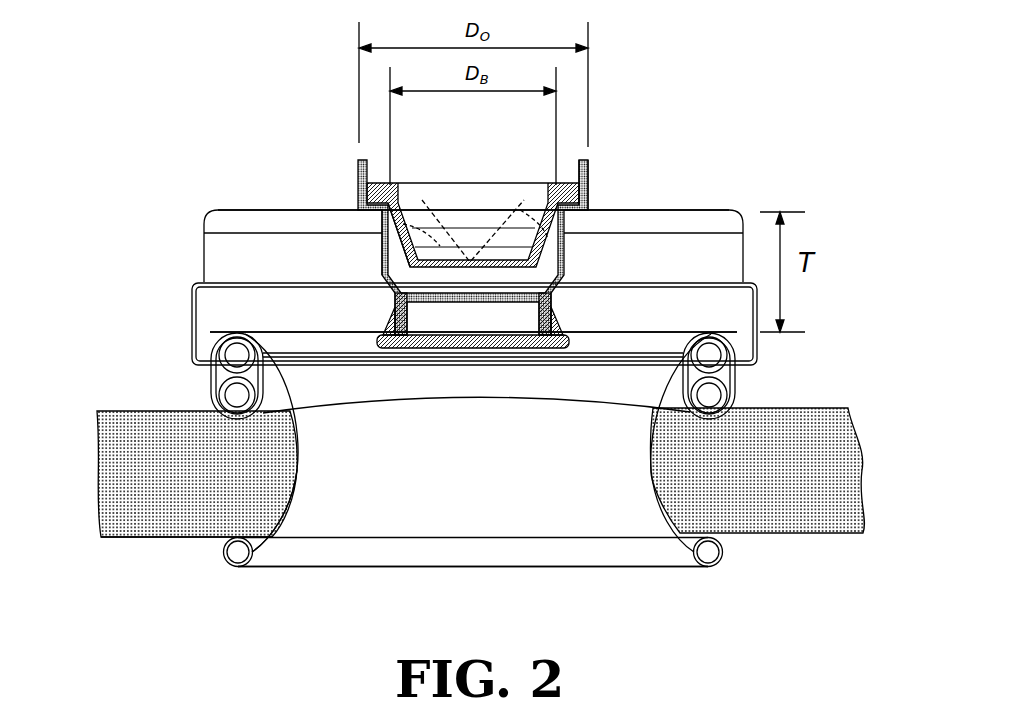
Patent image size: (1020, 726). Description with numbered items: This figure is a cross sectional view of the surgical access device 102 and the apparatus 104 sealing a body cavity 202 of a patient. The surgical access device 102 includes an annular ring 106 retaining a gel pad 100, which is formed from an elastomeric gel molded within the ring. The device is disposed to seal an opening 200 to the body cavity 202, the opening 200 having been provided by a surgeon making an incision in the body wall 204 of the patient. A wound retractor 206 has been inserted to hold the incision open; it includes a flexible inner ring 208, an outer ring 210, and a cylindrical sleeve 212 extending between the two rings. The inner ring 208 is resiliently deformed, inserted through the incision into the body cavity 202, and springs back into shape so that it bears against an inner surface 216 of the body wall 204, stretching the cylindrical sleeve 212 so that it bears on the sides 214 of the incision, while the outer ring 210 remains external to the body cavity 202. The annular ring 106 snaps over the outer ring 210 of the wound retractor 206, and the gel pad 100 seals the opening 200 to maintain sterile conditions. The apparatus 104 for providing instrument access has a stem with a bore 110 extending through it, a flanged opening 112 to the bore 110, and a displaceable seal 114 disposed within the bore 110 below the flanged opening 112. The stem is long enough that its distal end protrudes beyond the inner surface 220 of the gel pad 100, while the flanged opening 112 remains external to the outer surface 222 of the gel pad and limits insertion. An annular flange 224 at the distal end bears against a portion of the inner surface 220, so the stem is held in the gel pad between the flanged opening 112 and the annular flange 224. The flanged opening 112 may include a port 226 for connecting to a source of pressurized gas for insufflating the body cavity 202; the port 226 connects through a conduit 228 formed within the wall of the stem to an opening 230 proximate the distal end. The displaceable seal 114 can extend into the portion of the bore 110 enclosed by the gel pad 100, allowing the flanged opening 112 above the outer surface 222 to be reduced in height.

The gel pad 100 is at (663, 210).
The surgical access device 102 is at (189, 191).
The apparatus 104 is at (344, 131).
The annular ring 106 is at (192, 325).
The bore 110 is at (473, 207).
The flanged opening 112 is at (588, 182).
The displaceable seal 114 is at (367, 183).
The opening 200 is at (479, 459).
The body cavity 202 is at (483, 622).
The body wall 204 is at (96, 480).
The wound retractor 206 is at (782, 383).
The inner ring 208 is at (724, 549).
The outer ring 210 is at (211, 382).
The cylindrical sleeve 212 is at (296, 382).
The sides of the incision 214 is at (290, 478).
The inner surface of the body wall 216 is at (165, 540).
The inner surface of the gel pad 220 is at (600, 333).
The outer surface of the gel pad 222 is at (252, 210).
The annular flange 224 is at (557, 342).
The port 226 is at (358, 160).
The conduit 228 is at (382, 248).
The opening 230 is at (403, 330).